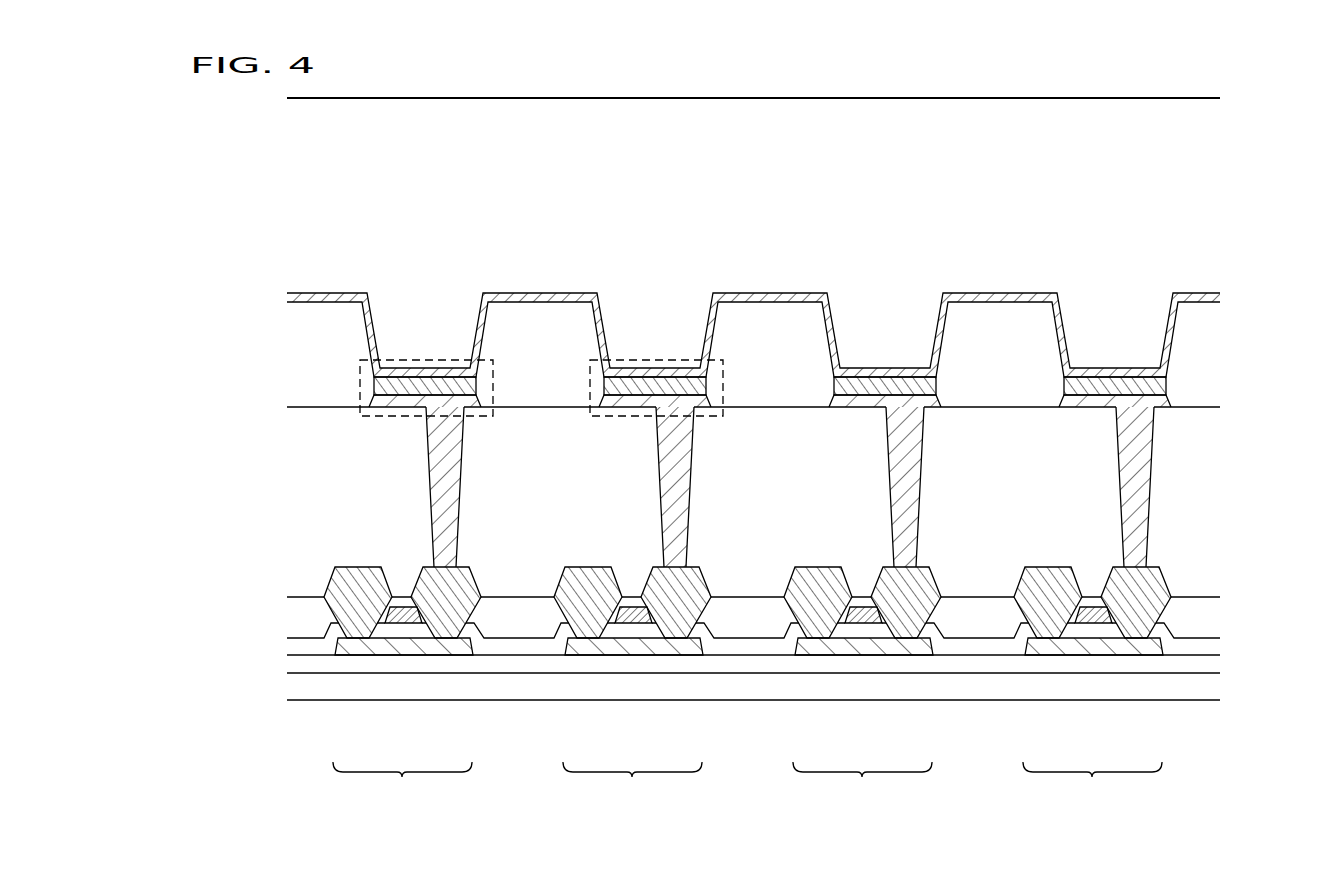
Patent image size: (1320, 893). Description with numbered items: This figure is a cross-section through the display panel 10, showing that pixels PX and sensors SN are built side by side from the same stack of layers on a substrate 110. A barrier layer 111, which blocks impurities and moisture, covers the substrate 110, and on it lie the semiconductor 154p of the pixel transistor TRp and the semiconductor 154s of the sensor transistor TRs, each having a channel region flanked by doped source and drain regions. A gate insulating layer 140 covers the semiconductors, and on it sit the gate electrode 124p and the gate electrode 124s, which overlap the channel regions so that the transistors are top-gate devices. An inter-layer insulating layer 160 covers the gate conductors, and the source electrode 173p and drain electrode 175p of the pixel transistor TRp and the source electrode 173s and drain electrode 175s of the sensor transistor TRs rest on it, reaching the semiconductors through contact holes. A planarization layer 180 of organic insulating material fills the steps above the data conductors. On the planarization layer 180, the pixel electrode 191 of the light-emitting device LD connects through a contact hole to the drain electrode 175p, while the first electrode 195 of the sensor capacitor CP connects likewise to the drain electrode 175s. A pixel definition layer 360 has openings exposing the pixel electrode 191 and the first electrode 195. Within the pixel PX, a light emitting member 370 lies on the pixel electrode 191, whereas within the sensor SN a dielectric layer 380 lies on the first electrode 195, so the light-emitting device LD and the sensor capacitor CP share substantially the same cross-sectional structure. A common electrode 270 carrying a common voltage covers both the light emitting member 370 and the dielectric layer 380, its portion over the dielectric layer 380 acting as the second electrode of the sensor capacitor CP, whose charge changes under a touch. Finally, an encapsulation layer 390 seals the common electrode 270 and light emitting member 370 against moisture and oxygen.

The display panel 10 is at (1140, 59).
The encapsulation layer 390 is at (1203, 178).
The common electrode 270 is at (1220, 297).
The pixel definition layer 360 is at (1202, 345).
The planarization layer 180 is at (1203, 476).
The inter-layer insulating layer 160 is at (1203, 620).
The gate insulating layer 140 is at (1202, 648).
The barrier layer 111 is at (1202, 663).
The substrate 110 is at (1203, 688).
The dielectric layer 380 is at (408, 390).
The first electrode 195 is at (450, 405).
The light emitting member 370 is at (645, 390).
The pixel electrode 191 is at (688, 405).
The gate electrode of the sensor transistor 124s is at (397, 610).
The source electrode of the sensor transistor 173s is at (362, 608).
The semiconductor of the sensor transistor 154s is at (398, 646).
The drain electrode of the sensor transistor 175s is at (457, 630).
The gate electrode of the pixel transistor 124p is at (637, 616).
The source electrode of the pixel transistor 173p is at (593, 608).
The semiconductor of the pixel transistor 154p is at (608, 647).
The drain electrode of the pixel transistor 175p is at (686, 633).
The sensor capacitor CP is at (350, 360).
The light-emitting device LD is at (656, 343).
The sensor transistor TRs is at (391, 528).
The pixel transistor TRp is at (634, 520).
The sensor SN is at (747, 784).
The pixel PX is at (747, 784).